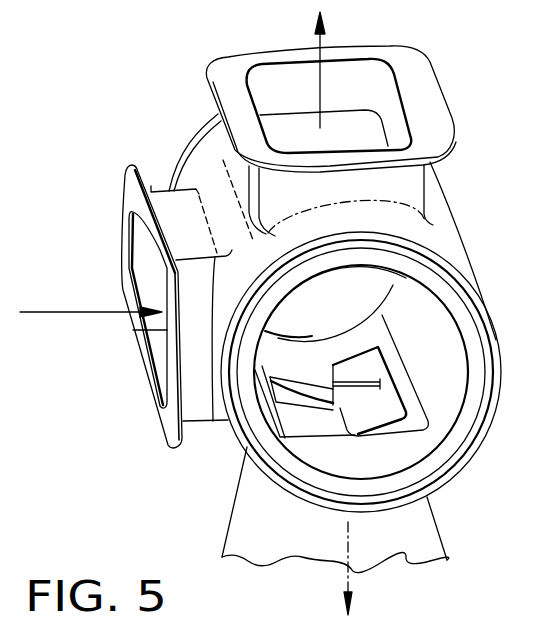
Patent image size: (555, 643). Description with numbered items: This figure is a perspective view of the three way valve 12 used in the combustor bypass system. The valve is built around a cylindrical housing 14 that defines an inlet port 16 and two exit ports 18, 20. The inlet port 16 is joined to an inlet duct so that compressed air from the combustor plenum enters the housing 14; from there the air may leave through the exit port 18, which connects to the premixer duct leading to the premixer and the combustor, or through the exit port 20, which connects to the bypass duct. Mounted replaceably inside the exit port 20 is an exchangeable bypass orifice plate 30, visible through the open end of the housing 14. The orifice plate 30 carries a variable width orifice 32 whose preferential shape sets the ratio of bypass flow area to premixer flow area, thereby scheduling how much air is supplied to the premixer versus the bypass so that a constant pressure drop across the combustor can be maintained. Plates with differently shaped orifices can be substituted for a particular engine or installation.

The three way valve 12 is at (136, 112).
The cylindrical housing 14 is at (460, 237).
The inlet port 16 is at (85, 313).
The exit port 18 is at (424, 108).
The exit port 20 is at (430, 528).
The bypass orifice plate 30 is at (420, 382).
The variable width orifice 32 is at (367, 413).